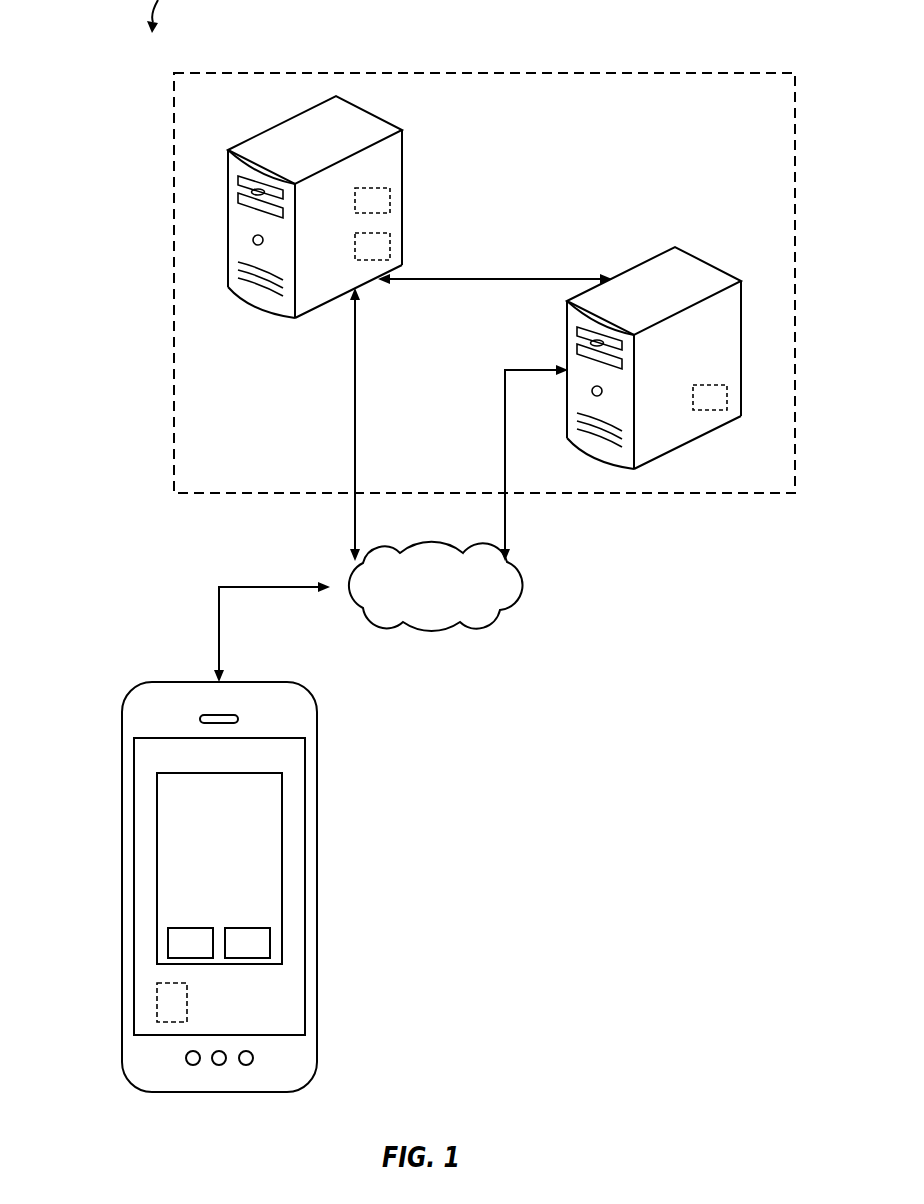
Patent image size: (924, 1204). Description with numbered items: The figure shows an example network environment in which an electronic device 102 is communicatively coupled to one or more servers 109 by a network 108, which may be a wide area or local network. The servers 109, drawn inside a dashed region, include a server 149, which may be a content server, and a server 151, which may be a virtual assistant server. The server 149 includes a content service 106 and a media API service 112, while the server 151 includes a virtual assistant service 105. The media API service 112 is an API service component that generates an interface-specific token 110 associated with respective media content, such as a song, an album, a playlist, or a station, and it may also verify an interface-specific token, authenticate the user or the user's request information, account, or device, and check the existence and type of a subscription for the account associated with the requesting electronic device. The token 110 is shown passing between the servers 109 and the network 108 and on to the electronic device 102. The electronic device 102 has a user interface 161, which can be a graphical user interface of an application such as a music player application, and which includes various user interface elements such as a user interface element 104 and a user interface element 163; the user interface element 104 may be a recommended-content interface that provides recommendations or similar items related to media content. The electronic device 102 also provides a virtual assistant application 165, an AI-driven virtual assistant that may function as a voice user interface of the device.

The electronic device 102 is at (318, 742).
The user interface element 104 is at (168, 947).
The virtual assistant service 105 is at (710, 403).
The content service 106 is at (384, 197).
The network 108 is at (537, 588).
The servers 109 is at (746, 73).
The interface-specific token 110 is at (267, 412).
The media API service 112 is at (384, 243).
The server 149 is at (292, 145).
The server 151 is at (642, 283).
The user interface 161 is at (283, 855).
The user interface element 163 is at (271, 947).
The virtual assistant application 165 is at (167, 1000).